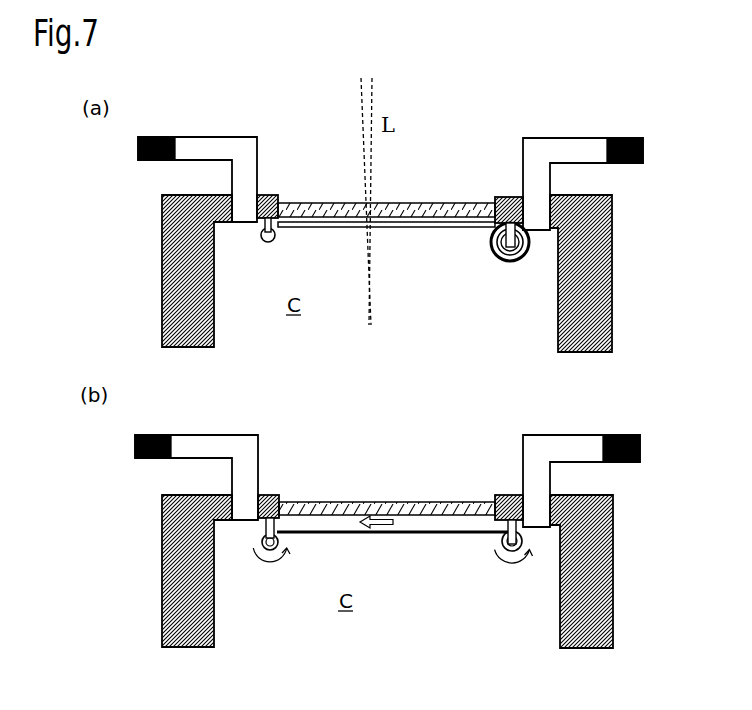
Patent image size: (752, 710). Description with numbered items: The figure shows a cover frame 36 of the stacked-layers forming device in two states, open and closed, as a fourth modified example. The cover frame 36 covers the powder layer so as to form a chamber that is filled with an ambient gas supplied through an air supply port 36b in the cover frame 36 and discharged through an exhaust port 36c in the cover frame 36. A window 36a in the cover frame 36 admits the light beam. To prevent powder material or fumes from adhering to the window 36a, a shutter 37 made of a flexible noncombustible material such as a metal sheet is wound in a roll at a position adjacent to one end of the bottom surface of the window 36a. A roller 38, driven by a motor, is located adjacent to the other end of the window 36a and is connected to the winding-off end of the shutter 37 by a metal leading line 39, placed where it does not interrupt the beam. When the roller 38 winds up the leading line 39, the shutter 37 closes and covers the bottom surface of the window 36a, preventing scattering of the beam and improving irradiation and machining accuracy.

The cover frame 36 is at (162, 267).
The window 36a is at (420, 206).
The air supply port 36b is at (222, 139).
The exhaust port 36c is at (557, 146).
The shutter 37 is at (517, 263).
The roller 38 is at (265, 243).
The leading line 39 is at (352, 230).